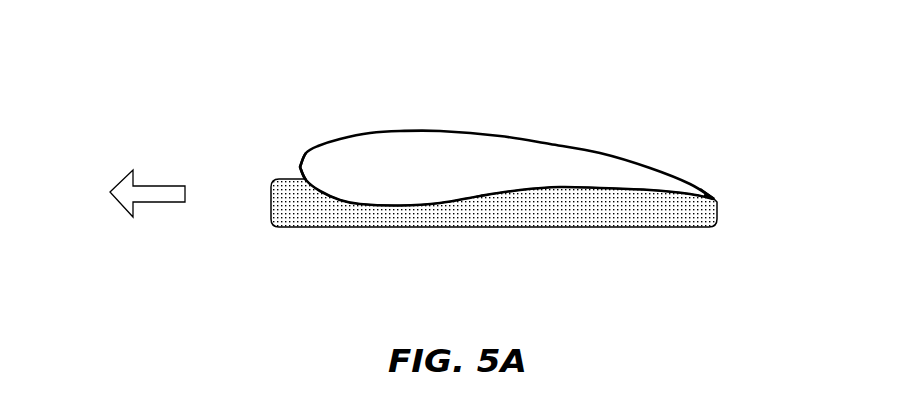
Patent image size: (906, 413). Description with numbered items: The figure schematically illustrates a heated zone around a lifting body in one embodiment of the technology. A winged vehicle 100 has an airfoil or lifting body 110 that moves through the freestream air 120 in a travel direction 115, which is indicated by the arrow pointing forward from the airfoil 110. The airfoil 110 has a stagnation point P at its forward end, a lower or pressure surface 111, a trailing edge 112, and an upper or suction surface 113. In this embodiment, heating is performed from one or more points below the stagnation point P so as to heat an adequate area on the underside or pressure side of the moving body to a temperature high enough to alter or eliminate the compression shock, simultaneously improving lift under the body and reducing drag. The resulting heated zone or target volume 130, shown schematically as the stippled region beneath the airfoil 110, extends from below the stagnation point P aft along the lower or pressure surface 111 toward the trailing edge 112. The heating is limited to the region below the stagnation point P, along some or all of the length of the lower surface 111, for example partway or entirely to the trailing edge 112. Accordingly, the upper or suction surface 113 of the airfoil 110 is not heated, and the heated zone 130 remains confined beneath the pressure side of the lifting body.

The winged vehicle 100 is at (501, 164).
The airfoil 110 is at (320, 145).
The lower or pressure surface 111 is at (485, 197).
The trailing edge 112 is at (718, 202).
The upper or suction surface 113 is at (465, 133).
The travel direction 115 is at (153, 186).
The freestream air 120 is at (88, 202).
The heated zone 130 is at (620, 228).
The stagnation point P is at (300, 166).